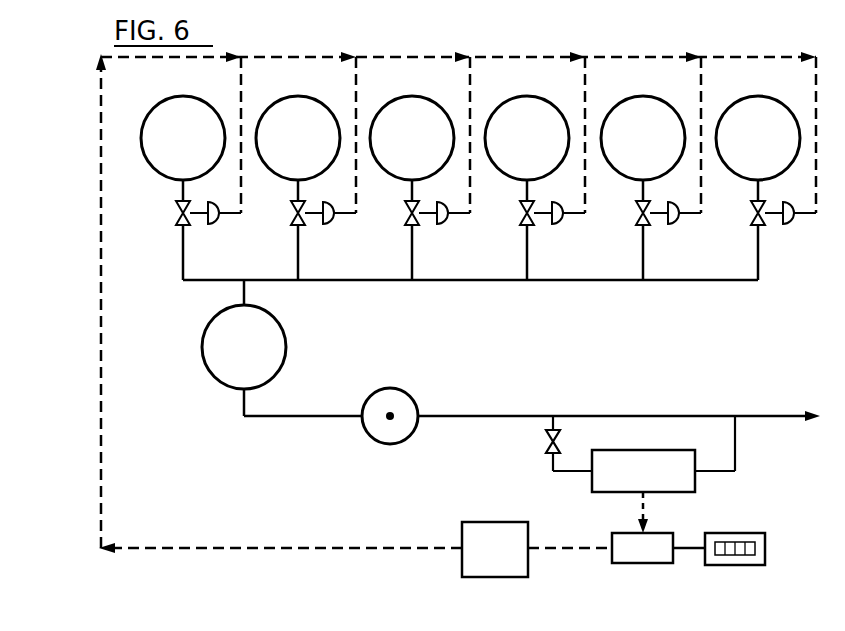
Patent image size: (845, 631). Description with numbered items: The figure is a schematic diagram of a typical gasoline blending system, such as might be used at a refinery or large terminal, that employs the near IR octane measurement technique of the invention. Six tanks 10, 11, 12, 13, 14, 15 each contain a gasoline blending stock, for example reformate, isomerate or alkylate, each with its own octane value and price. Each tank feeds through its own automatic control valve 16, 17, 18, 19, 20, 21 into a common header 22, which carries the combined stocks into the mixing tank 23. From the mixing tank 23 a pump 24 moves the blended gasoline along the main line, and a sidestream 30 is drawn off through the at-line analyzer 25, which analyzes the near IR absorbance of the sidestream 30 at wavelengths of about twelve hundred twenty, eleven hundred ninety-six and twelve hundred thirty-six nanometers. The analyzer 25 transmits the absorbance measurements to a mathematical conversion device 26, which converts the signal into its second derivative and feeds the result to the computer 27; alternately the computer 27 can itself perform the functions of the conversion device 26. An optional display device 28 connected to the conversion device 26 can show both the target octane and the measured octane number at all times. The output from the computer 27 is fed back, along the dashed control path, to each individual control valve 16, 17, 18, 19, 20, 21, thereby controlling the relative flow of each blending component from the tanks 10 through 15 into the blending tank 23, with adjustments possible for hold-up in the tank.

The tank 10 is at (174, 148).
The tank 11 is at (289, 148).
The tank 12 is at (403, 148).
The tank 13 is at (518, 148).
The tank 14 is at (634, 148).
The tank 15 is at (749, 148).
The automatic control valve 16 is at (208, 224).
The automatic control valve 17 is at (323, 224).
The automatic control valve 18 is at (437, 224).
The automatic control valve 19 is at (552, 224).
The automatic control valve 20 is at (668, 224).
The automatic control valve 21 is at (783, 224).
The common header 22 is at (470, 293).
The mixing tank 23 is at (244, 347).
The pump 24 is at (390, 416).
The at-line analyzer 25 is at (634, 481).
The mathematical conversion device 26 is at (634, 558).
The computer 27 is at (486, 560).
The display device 28 is at (756, 549).
The sidestream 30 is at (549, 462).